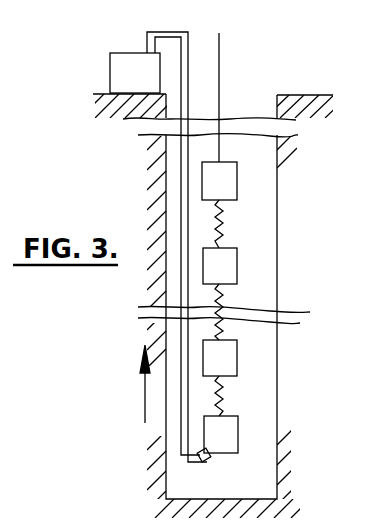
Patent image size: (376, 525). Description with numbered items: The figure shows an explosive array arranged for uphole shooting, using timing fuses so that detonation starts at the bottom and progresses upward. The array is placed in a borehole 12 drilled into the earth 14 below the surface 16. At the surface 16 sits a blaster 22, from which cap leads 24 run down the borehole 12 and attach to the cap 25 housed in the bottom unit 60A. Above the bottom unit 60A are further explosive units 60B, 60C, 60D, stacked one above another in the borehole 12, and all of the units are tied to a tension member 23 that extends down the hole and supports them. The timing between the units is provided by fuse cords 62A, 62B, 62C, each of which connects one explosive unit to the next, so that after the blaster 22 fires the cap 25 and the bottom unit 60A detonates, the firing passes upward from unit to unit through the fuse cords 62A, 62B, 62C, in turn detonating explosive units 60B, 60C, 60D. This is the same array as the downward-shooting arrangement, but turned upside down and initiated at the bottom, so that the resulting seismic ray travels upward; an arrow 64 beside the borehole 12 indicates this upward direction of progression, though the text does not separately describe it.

The borehole 12 is at (278, 162).
The earth 14 is at (112, 180).
The surface 16 is at (294, 95).
The blaster 22 is at (110, 72).
The tension member 23 is at (219, 42).
The cap leads 24 is at (168, 32).
The cap 25 is at (210, 460).
The bottom unit 60A is at (238, 432).
The explosive unit 60B is at (237, 358).
The explosive unit 60C is at (237, 260).
The explosive unit 60D is at (237, 180).
The fuse cord 62A is at (220, 400).
The fuse cord 62B is at (219, 325).
The fuse cord 62C is at (222, 232).
The flow direction arrow 64 is at (145, 398).